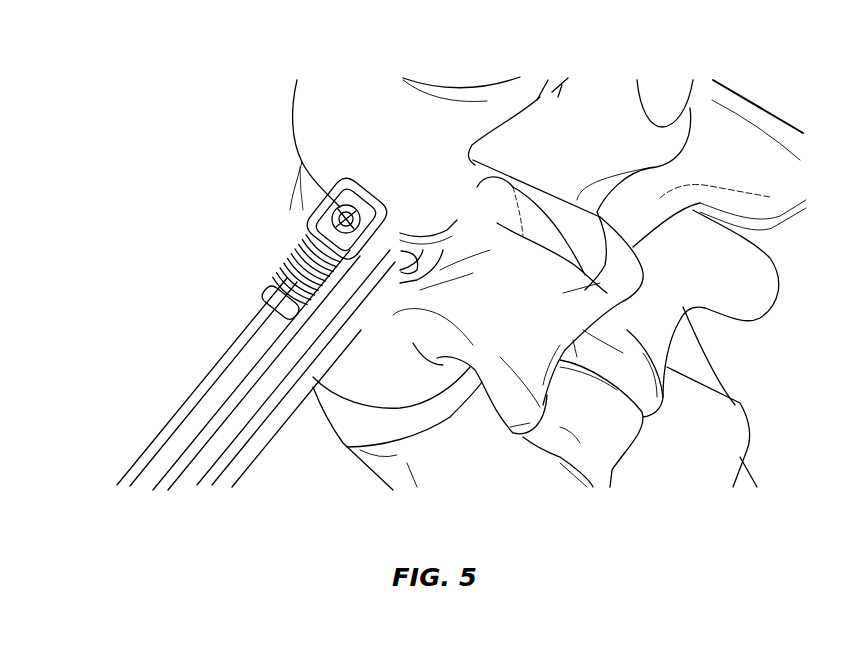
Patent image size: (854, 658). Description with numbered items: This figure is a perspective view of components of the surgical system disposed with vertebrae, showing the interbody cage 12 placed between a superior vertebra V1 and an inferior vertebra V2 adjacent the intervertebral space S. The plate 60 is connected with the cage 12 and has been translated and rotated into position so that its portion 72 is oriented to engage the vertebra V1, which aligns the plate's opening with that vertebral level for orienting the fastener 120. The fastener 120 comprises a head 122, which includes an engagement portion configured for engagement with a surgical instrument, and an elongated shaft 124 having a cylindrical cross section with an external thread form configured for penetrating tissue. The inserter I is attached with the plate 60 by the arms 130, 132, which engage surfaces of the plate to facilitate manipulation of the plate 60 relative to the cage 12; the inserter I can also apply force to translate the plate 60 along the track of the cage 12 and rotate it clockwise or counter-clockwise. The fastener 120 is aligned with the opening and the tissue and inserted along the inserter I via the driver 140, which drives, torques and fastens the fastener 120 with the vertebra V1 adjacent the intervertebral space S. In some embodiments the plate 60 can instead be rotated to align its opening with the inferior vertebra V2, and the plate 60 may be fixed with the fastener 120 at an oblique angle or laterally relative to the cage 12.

The interbody cage 12 is at (405, 253).
The plate 60 is at (335, 202).
The portion 72 is at (380, 190).
The fastener 120 is at (300, 268).
The head 122 is at (385, 248).
The elongated shaft 124 is at (358, 205).
The arm 130 is at (200, 382).
The arm 132 is at (257, 430).
The driver 140 is at (212, 443).
The inserter I is at (127, 446).
The intervertebral space S is at (473, 227).
The vertebra V1 is at (315, 108).
The vertebra V2 is at (357, 373).